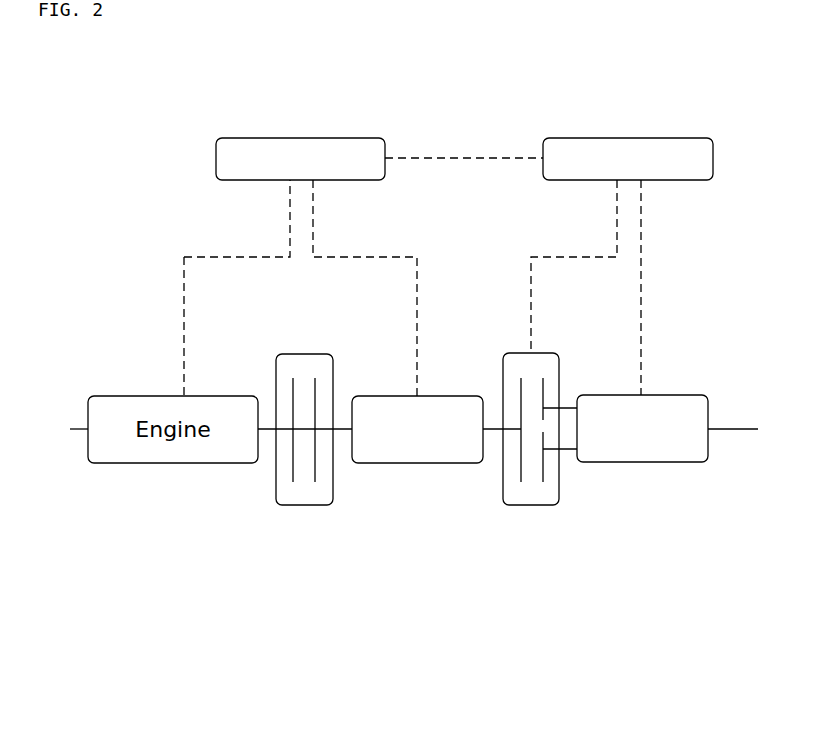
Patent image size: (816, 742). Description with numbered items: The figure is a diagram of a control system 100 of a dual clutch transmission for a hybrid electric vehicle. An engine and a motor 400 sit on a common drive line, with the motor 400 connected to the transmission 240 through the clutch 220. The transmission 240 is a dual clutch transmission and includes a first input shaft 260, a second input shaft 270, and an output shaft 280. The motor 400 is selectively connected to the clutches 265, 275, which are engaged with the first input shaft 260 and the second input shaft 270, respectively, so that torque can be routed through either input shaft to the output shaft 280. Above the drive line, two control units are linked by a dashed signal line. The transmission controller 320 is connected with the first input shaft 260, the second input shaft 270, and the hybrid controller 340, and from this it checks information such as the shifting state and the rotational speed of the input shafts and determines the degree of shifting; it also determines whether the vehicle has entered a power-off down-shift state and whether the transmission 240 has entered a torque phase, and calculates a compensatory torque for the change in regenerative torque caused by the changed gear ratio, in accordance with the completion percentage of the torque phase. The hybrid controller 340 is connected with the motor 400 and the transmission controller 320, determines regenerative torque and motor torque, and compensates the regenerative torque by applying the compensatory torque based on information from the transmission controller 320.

The hybrid vehicle powertrain system 100 is at (218, 229).
The clutch 220 is at (517, 505).
The transmission 240 is at (642, 462).
The first input shaft 260 is at (567, 405).
The clutch 265 is at (542, 395).
The second input shaft 270 is at (566, 455).
The clutch 275 is at (547, 480).
The output shaft 280 is at (735, 430).
The transmission controller 320 is at (628, 138).
The hybrid controller 340 is at (307, 138).
The motor 400 is at (412, 463).